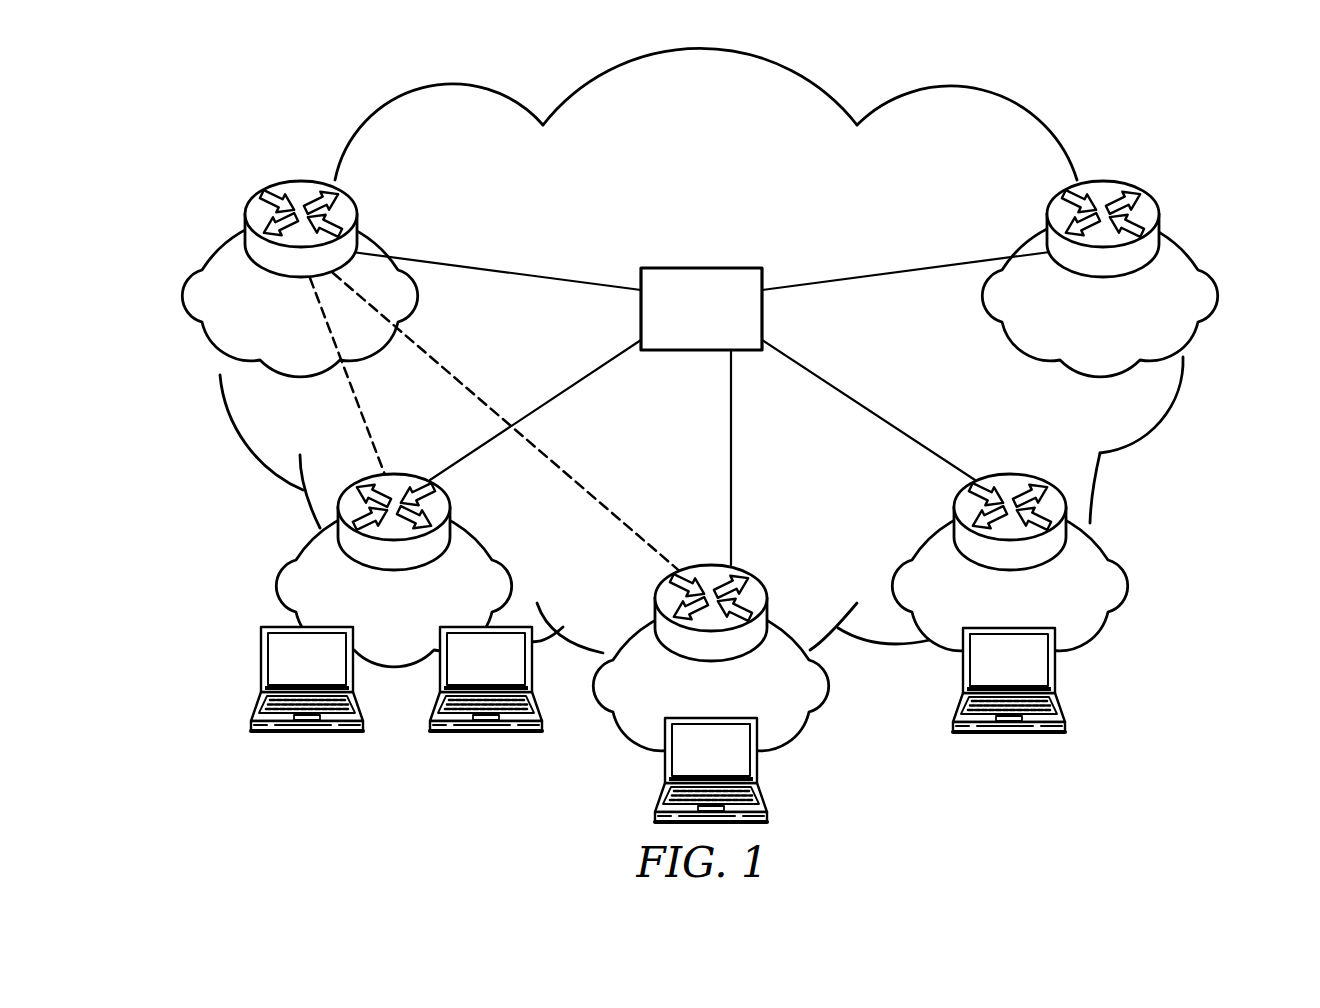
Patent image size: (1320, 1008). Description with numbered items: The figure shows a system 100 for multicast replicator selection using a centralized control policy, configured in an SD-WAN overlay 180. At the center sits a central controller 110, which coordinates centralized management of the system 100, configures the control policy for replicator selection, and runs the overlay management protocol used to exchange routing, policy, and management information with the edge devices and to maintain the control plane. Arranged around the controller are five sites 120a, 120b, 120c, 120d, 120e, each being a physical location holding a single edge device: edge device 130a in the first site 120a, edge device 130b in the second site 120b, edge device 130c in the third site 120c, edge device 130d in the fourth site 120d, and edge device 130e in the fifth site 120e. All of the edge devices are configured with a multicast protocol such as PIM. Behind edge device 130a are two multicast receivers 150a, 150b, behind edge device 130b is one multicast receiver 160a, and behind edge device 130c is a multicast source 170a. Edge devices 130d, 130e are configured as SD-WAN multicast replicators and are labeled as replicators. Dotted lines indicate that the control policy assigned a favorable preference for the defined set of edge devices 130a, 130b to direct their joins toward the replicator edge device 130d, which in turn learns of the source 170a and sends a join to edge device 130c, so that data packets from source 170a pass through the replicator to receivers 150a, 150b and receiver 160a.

The system 100 is at (1075, 75).
The central controller 110 is at (687, 343).
The Site 1 120a is at (280, 585).
The Site 2 120b is at (830, 678).
The Site 3 120c is at (1128, 587).
The Site 4 120d is at (182, 300).
The Site 5 120e is at (1220, 299).
The edge device 130a is at (450, 507).
The edge device 130b is at (692, 565).
The edge device 130c is at (952, 496).
The edge device (multicast replicator) 130d is at (352, 197).
The edge device (multicast replicator) 130e is at (1053, 197).
The multicast receiver 150a is at (299, 730).
The multicast receiver 150b is at (477, 730).
The multicast receiver 160a is at (767, 800).
The multicast source 170a is at (1066, 708).
The SD-WAN overlay 180 is at (686, 203).